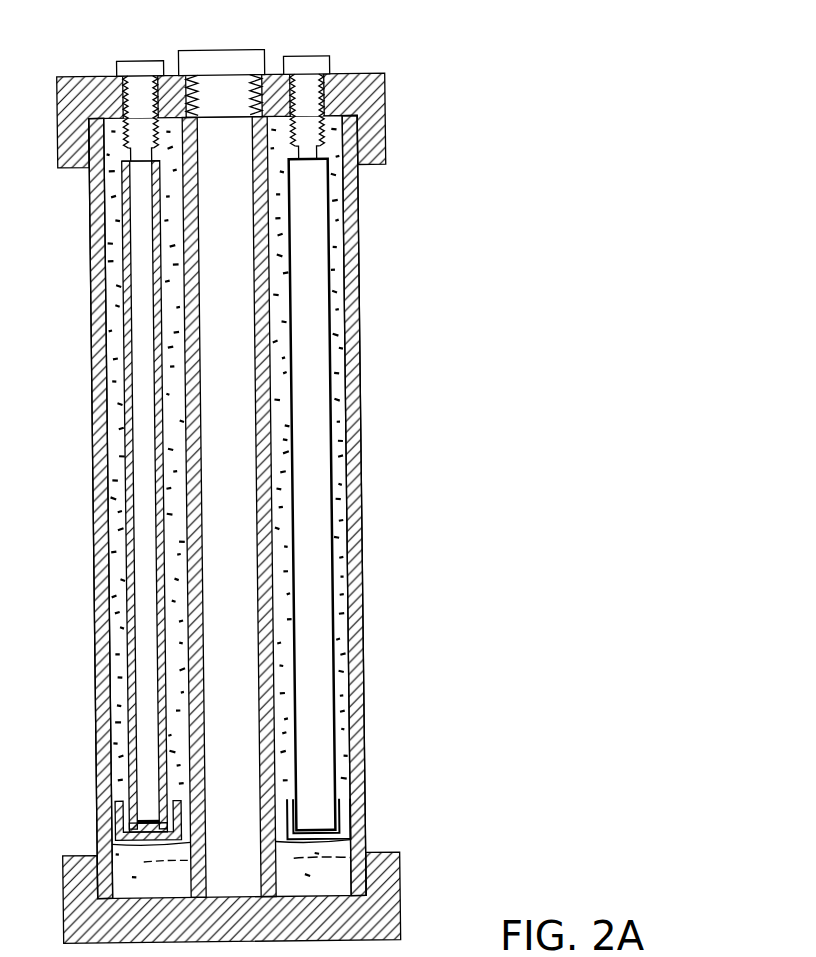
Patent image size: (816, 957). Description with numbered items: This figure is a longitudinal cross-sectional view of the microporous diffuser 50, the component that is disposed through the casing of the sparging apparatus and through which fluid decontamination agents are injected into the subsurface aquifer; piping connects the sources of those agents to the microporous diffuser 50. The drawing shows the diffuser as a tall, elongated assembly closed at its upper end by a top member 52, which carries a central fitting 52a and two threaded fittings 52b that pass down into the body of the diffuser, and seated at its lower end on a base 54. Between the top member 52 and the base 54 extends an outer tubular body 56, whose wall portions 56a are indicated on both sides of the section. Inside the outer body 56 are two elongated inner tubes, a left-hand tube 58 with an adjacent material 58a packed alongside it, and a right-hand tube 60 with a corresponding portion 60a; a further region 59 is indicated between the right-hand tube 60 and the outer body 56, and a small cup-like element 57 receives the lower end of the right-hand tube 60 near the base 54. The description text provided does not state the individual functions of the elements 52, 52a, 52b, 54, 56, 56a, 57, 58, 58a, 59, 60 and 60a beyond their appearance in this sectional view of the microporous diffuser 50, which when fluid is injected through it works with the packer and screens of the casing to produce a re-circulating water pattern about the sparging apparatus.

The microporous diffuser 50 is at (464, 70).
The top cap 52 is at (357, 73).
The central plug 52a is at (206, 50).
The terminal stud 52b is at (137, 60).
The base 54 is at (404, 913).
The outer tube 56 is at (358, 237).
The outer tube wall 56a is at (356, 296).
The cup 57 is at (350, 820).
The electrode tube 58 is at (114, 703).
The packing material 58a is at (112, 652).
The electrolyte filler 59 is at (338, 483).
The electrode tube 60 is at (273, 577).
The electrode cup 60a is at (108, 843).